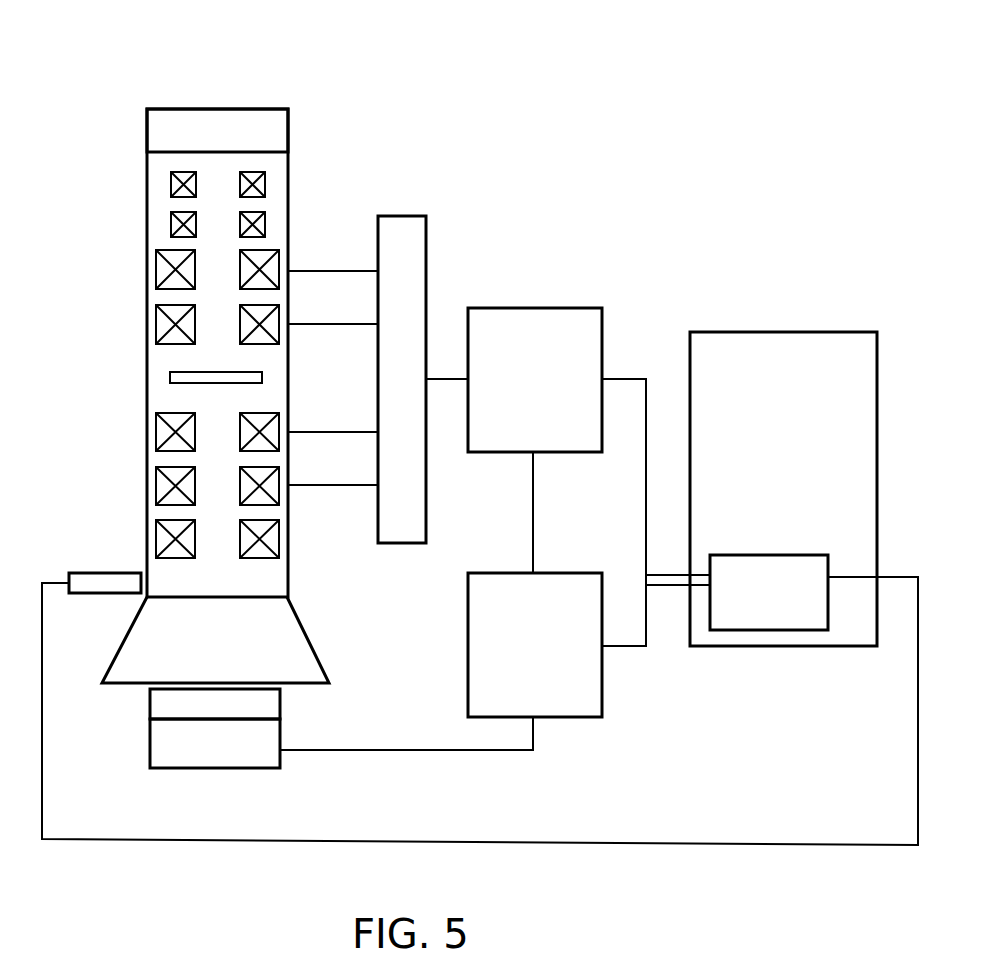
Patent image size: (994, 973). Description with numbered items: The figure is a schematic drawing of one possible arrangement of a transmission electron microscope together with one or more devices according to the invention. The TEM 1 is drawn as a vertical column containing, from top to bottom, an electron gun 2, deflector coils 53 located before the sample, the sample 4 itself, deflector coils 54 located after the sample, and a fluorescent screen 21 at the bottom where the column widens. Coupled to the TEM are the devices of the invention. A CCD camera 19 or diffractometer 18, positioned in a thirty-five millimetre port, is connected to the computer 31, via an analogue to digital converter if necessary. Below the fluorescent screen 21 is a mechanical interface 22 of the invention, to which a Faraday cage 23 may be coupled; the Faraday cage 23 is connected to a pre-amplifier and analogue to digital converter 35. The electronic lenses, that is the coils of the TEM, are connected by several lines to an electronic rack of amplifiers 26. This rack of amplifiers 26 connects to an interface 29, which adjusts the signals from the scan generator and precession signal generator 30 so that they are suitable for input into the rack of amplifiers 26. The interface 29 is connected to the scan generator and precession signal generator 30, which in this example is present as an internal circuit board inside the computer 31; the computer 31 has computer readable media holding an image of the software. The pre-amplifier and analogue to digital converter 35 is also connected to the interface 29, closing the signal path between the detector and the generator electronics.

The TEM 1 is at (124, 206).
The electron gun 2 is at (249, 115).
The sample 4 is at (170, 378).
The diffractometer 18 is at (94, 572).
The CCD camera 19 is at (103, 541).
The fluorescent screen 21 is at (213, 682).
The mechanical interface 22 is at (153, 706).
The Faraday cage 23 is at (153, 748).
The electronic rack of amplifiers 26 is at (411, 215).
The interface 29 is at (566, 307).
The scan generator and precession signal generator 30 is at (777, 555).
The computer 31 is at (837, 332).
The pre-amplifier and analogue to digital converter 35 is at (573, 573).
The deflector coils 53 is at (280, 261).
The deflector coils 54 is at (280, 542).